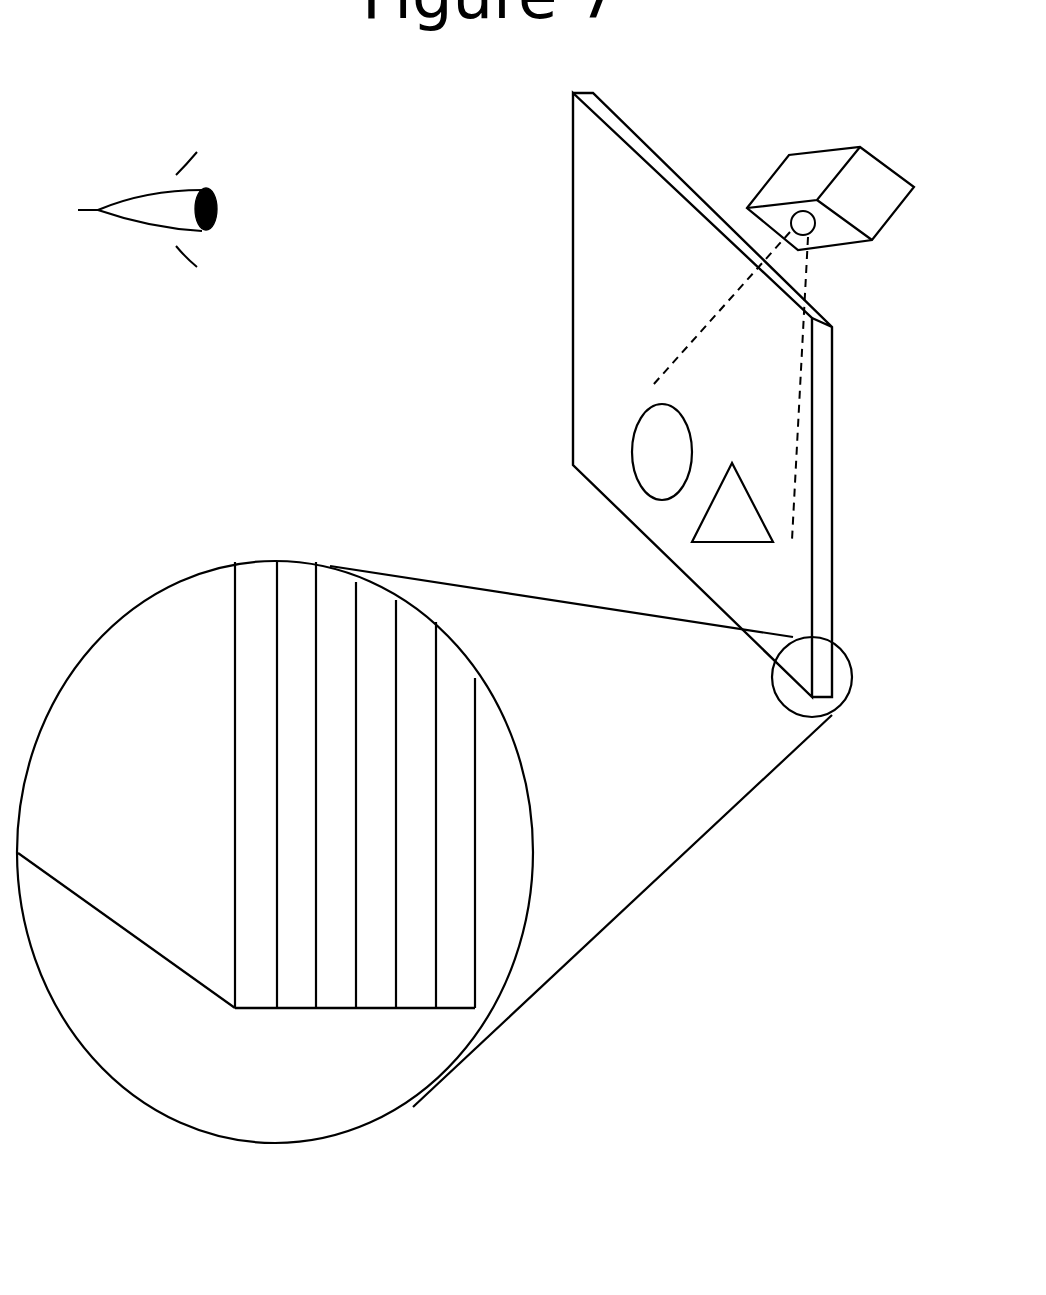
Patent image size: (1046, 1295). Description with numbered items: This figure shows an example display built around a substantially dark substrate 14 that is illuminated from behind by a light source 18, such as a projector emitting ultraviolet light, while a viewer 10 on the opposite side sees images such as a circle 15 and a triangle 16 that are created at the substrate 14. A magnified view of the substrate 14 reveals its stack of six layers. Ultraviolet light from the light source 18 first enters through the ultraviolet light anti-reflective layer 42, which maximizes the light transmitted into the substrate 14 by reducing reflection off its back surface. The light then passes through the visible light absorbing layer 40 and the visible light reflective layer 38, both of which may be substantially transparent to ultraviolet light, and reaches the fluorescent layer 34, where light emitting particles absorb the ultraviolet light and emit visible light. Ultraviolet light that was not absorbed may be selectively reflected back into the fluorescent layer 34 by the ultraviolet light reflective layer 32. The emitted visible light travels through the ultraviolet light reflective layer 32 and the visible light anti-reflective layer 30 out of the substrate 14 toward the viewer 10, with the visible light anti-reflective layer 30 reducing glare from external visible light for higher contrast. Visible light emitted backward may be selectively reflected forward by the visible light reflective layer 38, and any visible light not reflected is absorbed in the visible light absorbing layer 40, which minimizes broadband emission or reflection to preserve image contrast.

The viewer 10 is at (197, 170).
The substrate 14 is at (693, 188).
The circle 15 is at (652, 443).
The triangle 16 is at (732, 522).
The light source 18 is at (810, 170).
The visible light anti-reflective layer 30 is at (255, 990).
The ultraviolet light reflective layer 32 is at (295, 990).
The fluorescent layer 34 is at (335, 990).
The visible light reflective layer 38 is at (375, 990).
The visible light absorbing layer 40 is at (415, 990).
The ultraviolet light anti-reflective layer 42 is at (453, 990).